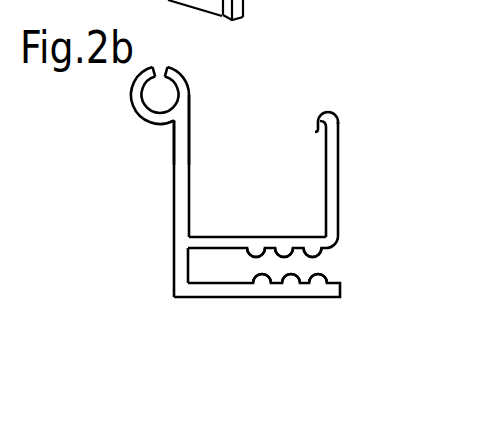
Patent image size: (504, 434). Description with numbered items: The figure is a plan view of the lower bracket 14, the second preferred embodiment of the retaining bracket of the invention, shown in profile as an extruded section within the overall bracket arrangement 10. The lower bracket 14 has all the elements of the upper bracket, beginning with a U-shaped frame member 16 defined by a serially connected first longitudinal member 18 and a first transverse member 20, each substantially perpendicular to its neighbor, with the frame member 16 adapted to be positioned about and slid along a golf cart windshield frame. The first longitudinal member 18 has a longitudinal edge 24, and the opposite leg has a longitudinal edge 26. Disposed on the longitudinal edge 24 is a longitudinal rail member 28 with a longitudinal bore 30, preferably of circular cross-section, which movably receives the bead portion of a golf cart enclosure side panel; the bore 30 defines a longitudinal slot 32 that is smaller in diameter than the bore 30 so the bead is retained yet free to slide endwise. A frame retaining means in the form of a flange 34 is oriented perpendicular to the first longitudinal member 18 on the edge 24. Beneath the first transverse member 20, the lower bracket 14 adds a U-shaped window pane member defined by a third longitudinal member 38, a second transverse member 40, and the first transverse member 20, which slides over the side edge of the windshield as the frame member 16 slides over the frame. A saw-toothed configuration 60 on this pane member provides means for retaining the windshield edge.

The mounting assembly 10 is at (378, 39).
The lower bracket 14 is at (415, 62).
The U-shaped frame member 16 is at (287, 116).
The first longitudinal member 18 is at (173, 193).
The first transverse member 20 is at (216, 237).
The longitudinal edge 24 is at (191, 113).
The longitudinal edge 26 is at (337, 122).
The longitudinal rail member 28 is at (131, 84).
The longitudinal bore 30 is at (169, 89).
The longitudinal slot 32 is at (160, 68).
The flange 34 is at (328, 111).
The third longitudinal member 38 is at (173, 268).
The second transverse member 40 is at (231, 299).
The saw-toothed configuration 60 is at (320, 263).